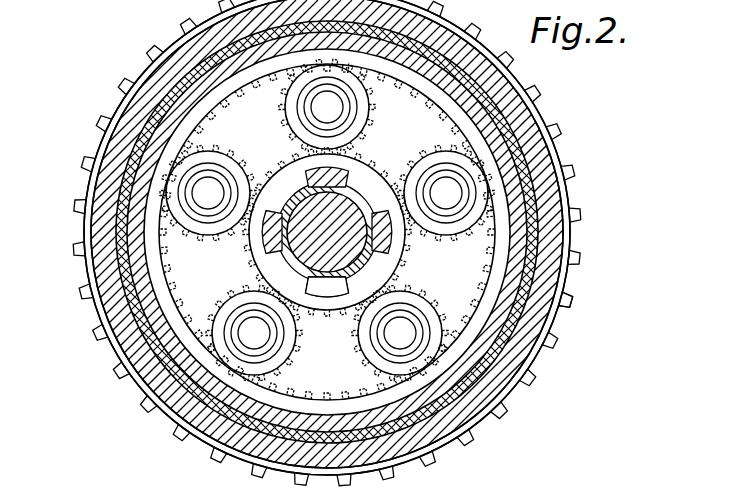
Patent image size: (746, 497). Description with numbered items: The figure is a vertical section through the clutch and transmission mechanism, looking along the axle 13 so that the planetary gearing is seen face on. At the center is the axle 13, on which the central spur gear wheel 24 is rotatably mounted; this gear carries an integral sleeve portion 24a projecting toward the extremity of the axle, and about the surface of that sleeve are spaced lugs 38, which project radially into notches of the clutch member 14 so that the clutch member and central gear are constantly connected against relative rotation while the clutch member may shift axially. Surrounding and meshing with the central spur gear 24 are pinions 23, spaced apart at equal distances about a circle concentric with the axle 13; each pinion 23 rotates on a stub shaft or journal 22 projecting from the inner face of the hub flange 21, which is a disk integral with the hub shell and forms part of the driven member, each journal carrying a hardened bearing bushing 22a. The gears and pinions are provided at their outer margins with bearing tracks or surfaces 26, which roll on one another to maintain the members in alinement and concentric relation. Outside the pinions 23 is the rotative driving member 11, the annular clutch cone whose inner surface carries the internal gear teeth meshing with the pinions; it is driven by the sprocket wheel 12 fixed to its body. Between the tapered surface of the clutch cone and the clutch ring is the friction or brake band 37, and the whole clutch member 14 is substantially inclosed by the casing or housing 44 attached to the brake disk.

The friction or brake band 37 is at (533, 110).
The sprocket wheel 12 is at (573, 299).
The casing or housing 44 is at (566, 275).
The clutch ring or member 14 is at (540, 315).
The rotative driving member 11 is at (520, 252).
The bearing tracks or surfaces 26 is at (175, 288).
The stub shafts or journals 22 is at (402, 323).
The bearing bushing 22a is at (418, 322).
The pinion 23 is at (360, 354).
The central spur gear wheel 24 is at (248, 252).
The sleeve portion or extension 24a is at (308, 187).
The hub flange 21 is at (347, 210).
The axle 13 is at (347, 210).
The lugs 38 is at (349, 284).